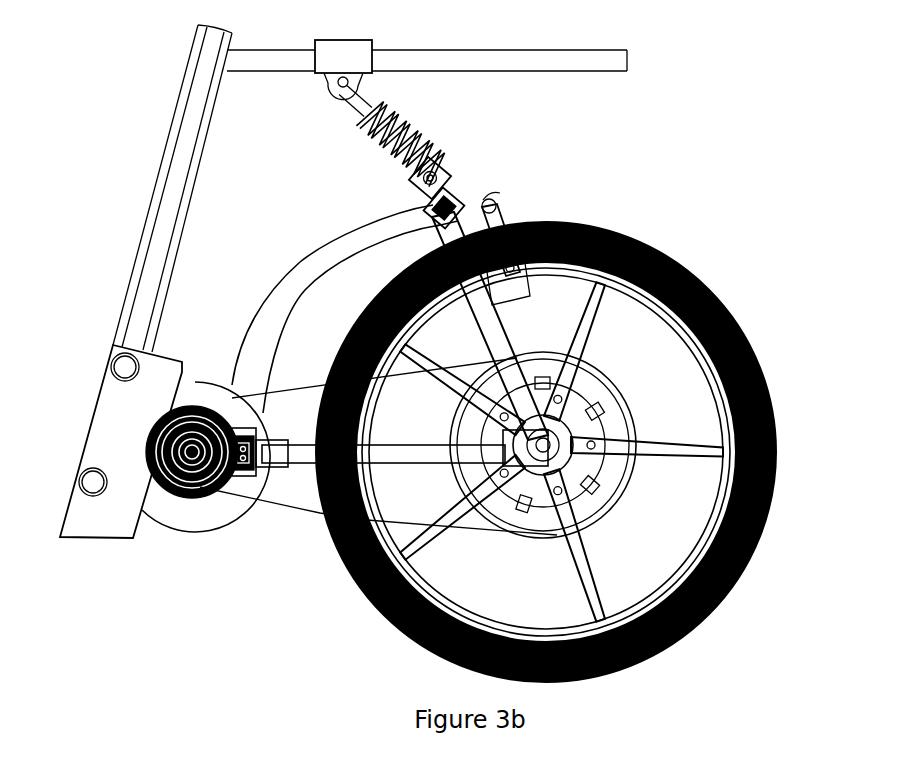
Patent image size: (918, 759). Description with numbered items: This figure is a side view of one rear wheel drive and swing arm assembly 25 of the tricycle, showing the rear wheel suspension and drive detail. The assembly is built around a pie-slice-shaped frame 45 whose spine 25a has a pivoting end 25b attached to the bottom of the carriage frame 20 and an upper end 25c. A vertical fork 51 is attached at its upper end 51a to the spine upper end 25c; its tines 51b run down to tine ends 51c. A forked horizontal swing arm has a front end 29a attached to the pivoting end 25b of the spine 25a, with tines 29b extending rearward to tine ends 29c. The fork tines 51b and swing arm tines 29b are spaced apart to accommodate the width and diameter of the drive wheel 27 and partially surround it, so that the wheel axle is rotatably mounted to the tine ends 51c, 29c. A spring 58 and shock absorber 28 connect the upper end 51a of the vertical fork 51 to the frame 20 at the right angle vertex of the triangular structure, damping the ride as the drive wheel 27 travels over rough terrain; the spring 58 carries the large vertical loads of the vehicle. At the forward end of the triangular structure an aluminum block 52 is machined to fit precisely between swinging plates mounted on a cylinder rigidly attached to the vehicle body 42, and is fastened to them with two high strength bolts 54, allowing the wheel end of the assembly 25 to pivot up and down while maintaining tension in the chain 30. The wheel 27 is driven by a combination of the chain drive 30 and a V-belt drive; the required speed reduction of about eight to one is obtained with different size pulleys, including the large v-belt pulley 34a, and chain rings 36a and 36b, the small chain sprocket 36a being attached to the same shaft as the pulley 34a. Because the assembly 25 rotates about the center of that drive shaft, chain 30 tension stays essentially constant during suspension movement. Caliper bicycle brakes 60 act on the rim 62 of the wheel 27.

The carriage frame 20 is at (437, 62).
The rear wheel drive and swing arm assembly 25 is at (673, 237).
The spine 25a is at (333, 250).
The pivoting end 25b is at (223, 500).
The upper end 25c is at (433, 207).
The drive wheel 27 is at (713, 290).
The shock absorber 28 is at (403, 143).
The front end 29a is at (277, 452).
The tines 29b is at (332, 548).
The tine ends 29c is at (385, 618).
The chain drive 30 is at (275, 510).
The large v-belt pulley 34a is at (198, 382).
The small chain sprocket 36a is at (178, 495).
The chain ring 36b is at (610, 478).
The vehicle body 42 is at (103, 435).
The pie-slice-shaped frame 45 is at (290, 266).
The vertical fork 51 is at (510, 370).
The upper end 51a is at (437, 197).
The tines 51b is at (530, 372).
The tine ends 51c is at (585, 420).
The aluminum block 52 is at (273, 440).
The high strength bolts 54 is at (240, 430).
The spring 58 is at (428, 152).
The brakes 60 is at (517, 223).
The rim 62 is at (615, 230).